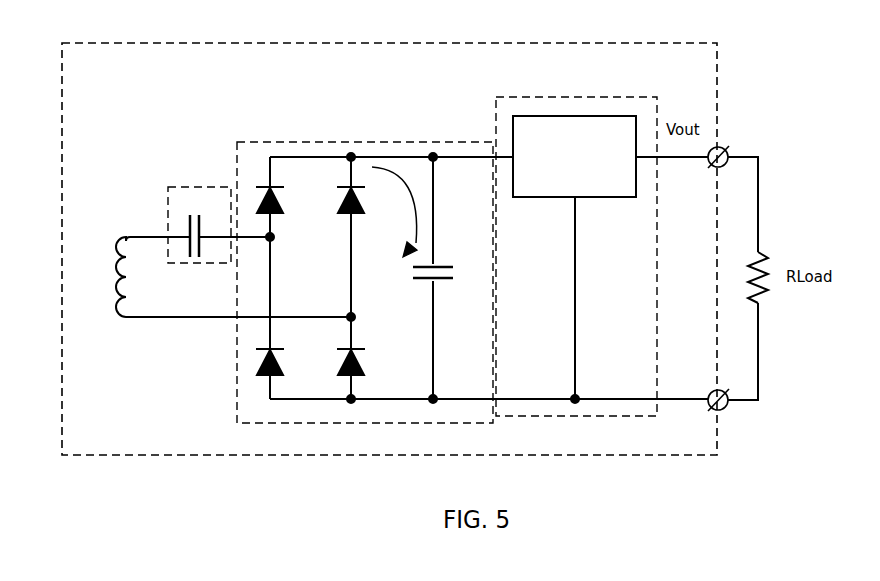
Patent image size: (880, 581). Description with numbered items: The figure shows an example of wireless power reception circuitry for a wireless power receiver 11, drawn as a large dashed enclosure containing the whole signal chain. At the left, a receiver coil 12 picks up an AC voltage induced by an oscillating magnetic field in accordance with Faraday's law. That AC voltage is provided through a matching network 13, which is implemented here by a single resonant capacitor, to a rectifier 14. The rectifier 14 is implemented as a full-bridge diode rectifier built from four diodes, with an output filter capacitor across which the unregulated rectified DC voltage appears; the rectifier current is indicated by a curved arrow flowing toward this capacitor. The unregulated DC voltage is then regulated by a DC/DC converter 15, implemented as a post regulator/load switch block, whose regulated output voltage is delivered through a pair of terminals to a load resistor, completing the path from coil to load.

The wireless power receiver 11 is at (433, 43).
The receiver coil 12 is at (120, 235).
The matching network 13 is at (200, 187).
The rectifier 14 is at (317, 143).
The DC/DC converter 15 is at (580, 97).